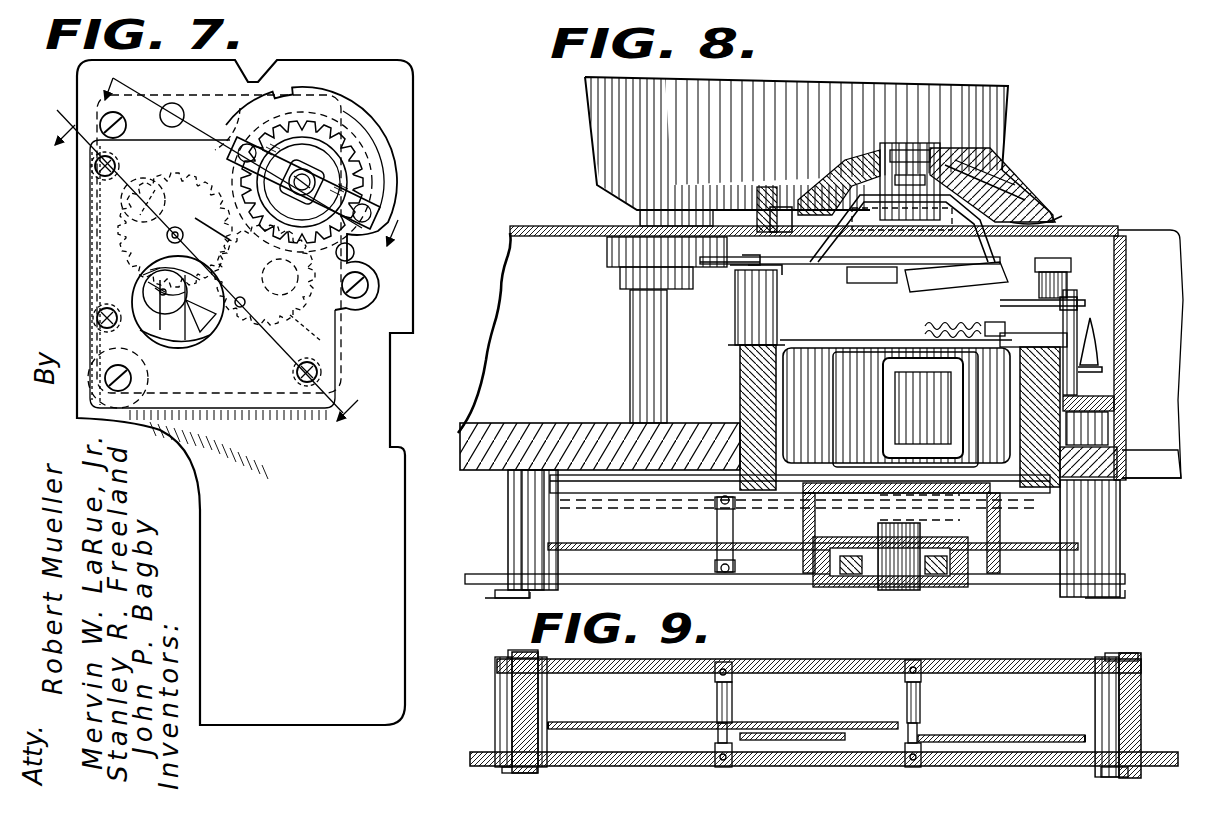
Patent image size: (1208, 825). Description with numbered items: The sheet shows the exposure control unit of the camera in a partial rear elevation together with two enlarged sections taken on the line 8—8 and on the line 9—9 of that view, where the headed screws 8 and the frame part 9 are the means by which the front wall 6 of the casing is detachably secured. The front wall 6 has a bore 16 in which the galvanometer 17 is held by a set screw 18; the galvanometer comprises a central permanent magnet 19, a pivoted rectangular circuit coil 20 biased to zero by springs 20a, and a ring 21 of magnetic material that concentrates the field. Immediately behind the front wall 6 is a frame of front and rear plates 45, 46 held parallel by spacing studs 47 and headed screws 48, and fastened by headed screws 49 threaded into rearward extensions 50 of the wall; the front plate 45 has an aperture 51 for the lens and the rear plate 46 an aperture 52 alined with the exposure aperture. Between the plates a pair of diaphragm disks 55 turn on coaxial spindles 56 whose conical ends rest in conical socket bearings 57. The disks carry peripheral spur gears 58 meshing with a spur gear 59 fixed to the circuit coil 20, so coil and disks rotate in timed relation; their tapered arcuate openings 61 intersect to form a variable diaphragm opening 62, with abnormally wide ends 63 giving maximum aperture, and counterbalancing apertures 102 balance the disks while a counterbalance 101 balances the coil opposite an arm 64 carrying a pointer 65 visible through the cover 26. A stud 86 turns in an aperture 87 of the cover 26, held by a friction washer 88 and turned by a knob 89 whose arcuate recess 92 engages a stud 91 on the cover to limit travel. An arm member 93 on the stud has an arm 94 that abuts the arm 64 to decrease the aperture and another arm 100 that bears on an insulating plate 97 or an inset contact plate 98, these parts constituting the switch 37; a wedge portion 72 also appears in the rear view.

In FIG. 7, the front wall 6 is at (412, 92).
In FIG. 8, the front wall 6 is at (586, 425).
In FIG. 7, the headed screws 8 is at (268, 163).
In FIG. 7, the frame part 9 is at (209, 261).
In FIG. 8, the bore 16 is at (1110, 466).
In FIG. 7, the galvanometer 17 is at (372, 213).
In FIG. 8, the galvanometer 17 is at (1112, 400).
In FIG. 8, the set screw 18 is at (1108, 432).
In FIG. 8, the permanent magnet 19 is at (1081, 342).
In FIG. 8, the circuit coil 20 is at (845, 395).
In FIG. 8, the springs 20a is at (983, 517).
In FIG. 8, the ring 21 is at (744, 390).
In FIG. 8, the cover 26 is at (566, 226).
In FIG. 8, the switch 37 is at (1010, 256).
In FIG. 7, the front plate 45 is at (92, 297).
In FIG. 8, the front plate 45 is at (612, 498).
In FIG. 9, the front plate 45 is at (818, 659).
In FIG. 7, the rear plate 46 is at (88, 176).
In FIG. 8, the rear plate 46 is at (628, 586).
In FIG. 9, the rear plate 46 is at (668, 767).
In FIG. 7, the spacing studs 47 is at (92, 190).
In FIG. 8, the spacing studs 47 is at (560, 530).
In FIG. 9, the spacing studs 47 is at (500, 708).
In FIG. 7, the headed screws 48 is at (95, 166).
In FIG. 8, the headed screws 48 is at (530, 595).
In FIG. 9, the headed screws 48 is at (503, 772).
In FIG. 7, the headed screws 49 is at (104, 118).
In FIG. 8, the headed screws 49 is at (485, 598).
In FIG. 8, the rearward extensions 50 is at (492, 518).
In FIG. 7, the aperture 51 is at (158, 268).
In FIG. 7, the aperture 52 is at (145, 280).
In FIG. 7, the diaphragm disks 55 is at (260, 150).
In FIG. 8, the diaphragm disks 55 is at (640, 543).
In FIG. 9, the diaphragm disks 55 is at (626, 722).
In FIG. 8, the spindles 56 is at (716, 528).
In FIG. 9, the spindles 56 is at (716, 705).
In FIG. 7, the conical socket bearings 57 is at (178, 227).
In FIG. 8, the conical socket bearings 57 is at (716, 505).
In FIG. 9, the conical socket bearings 57 is at (714, 678).
In FIG. 7, the peripheral spur gears 58 is at (168, 104).
In FIG. 9, the peripheral spur gears 58 is at (558, 722).
In FIG. 7, the spur gear 59 is at (372, 148).
In FIG. 8, the spur gear 59 is at (992, 590).
In FIG. 7, the arcuate openings 61 is at (205, 238).
In FIG. 9, the arcuate openings 61 is at (800, 733).
In FIG. 7, the diaphragm opening 62 is at (200, 322).
In FIG. 7, the wide ends 63 is at (215, 262).
In FIG. 8, the arm 64 is at (835, 298).
In FIG. 8, the pointer 65 is at (742, 256).
In FIG. 7, the wedge 72 is at (217, 316).
In FIG. 8, the stud 86 is at (1005, 190).
In FIG. 8, the aperture 87 is at (880, 165).
In FIG. 8, the friction washer 88 is at (1000, 178).
In FIG. 8, the knob 89 is at (990, 168).
In FIG. 8, the stud 91 is at (770, 215).
In FIG. 8, the arcuate recess 92 is at (788, 190).
In FIG. 8, the arm member 93 is at (850, 188).
In FIG. 8, the arm 94 is at (902, 218).
In FIG. 8, the insulating plate 97 is at (945, 290).
In FIG. 8, the contact plate 98 is at (998, 321).
In FIG. 8, the arm 100 is at (1055, 212).
In FIG. 8, the counterbalance 101 is at (957, 323).
In FIG. 7, the counterbalancing apertures 102 is at (230, 258).